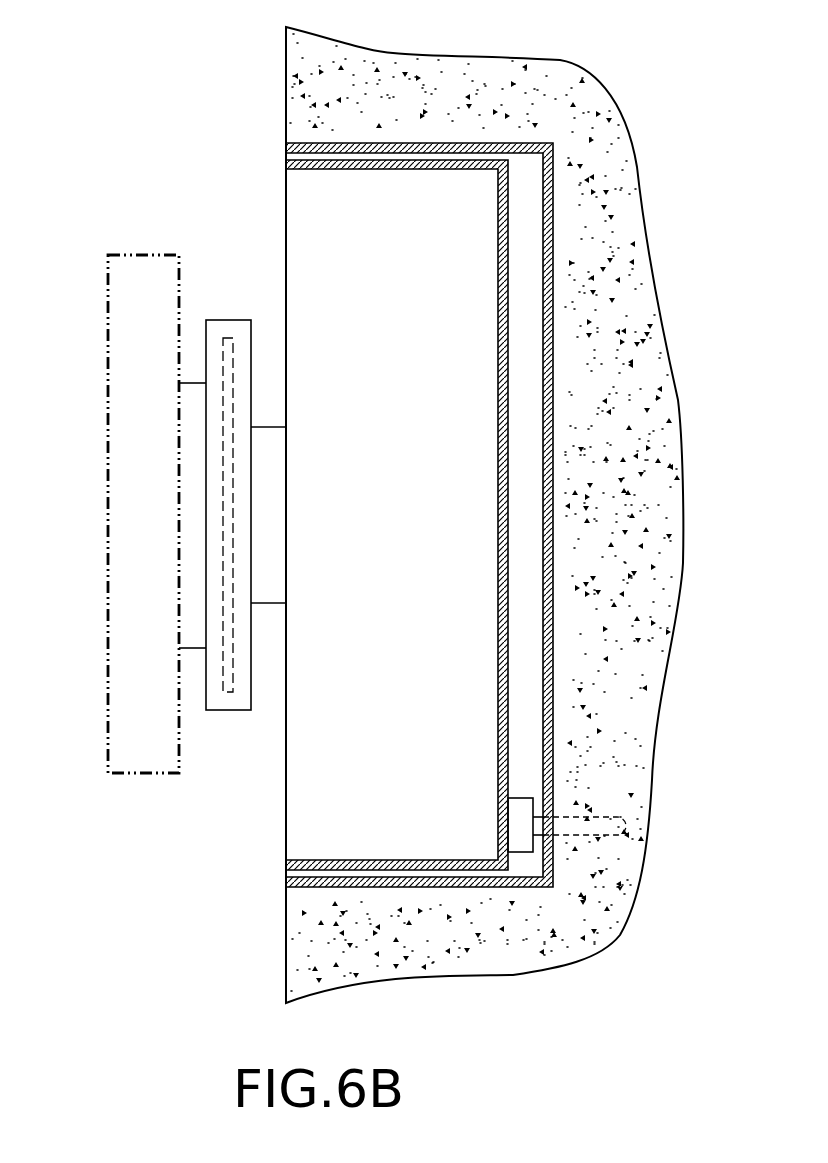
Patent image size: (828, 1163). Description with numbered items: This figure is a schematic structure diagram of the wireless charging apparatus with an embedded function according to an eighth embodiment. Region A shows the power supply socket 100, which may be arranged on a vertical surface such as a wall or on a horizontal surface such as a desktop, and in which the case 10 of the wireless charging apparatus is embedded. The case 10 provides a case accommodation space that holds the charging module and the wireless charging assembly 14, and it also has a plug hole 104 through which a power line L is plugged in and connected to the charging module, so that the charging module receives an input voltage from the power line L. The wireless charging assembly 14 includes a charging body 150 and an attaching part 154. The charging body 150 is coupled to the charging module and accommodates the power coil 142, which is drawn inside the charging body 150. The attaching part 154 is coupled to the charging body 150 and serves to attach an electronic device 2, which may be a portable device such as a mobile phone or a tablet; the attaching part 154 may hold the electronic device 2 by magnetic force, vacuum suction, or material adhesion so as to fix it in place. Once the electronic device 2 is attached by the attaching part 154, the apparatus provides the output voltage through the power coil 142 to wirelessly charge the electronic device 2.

The wall structure A is at (287, 90).
The power supply socket 100 is at (440, 142).
The case 10 is at (287, 165).
The wireless charging assembly 14 is at (155, 435).
The electronic device 2 is at (133, 422).
The power coil 142 is at (230, 497).
The charging body 150 is at (217, 597).
The attaching part 154 is at (190, 558).
The plug hole 104 is at (517, 810).
The power line L is at (592, 827).